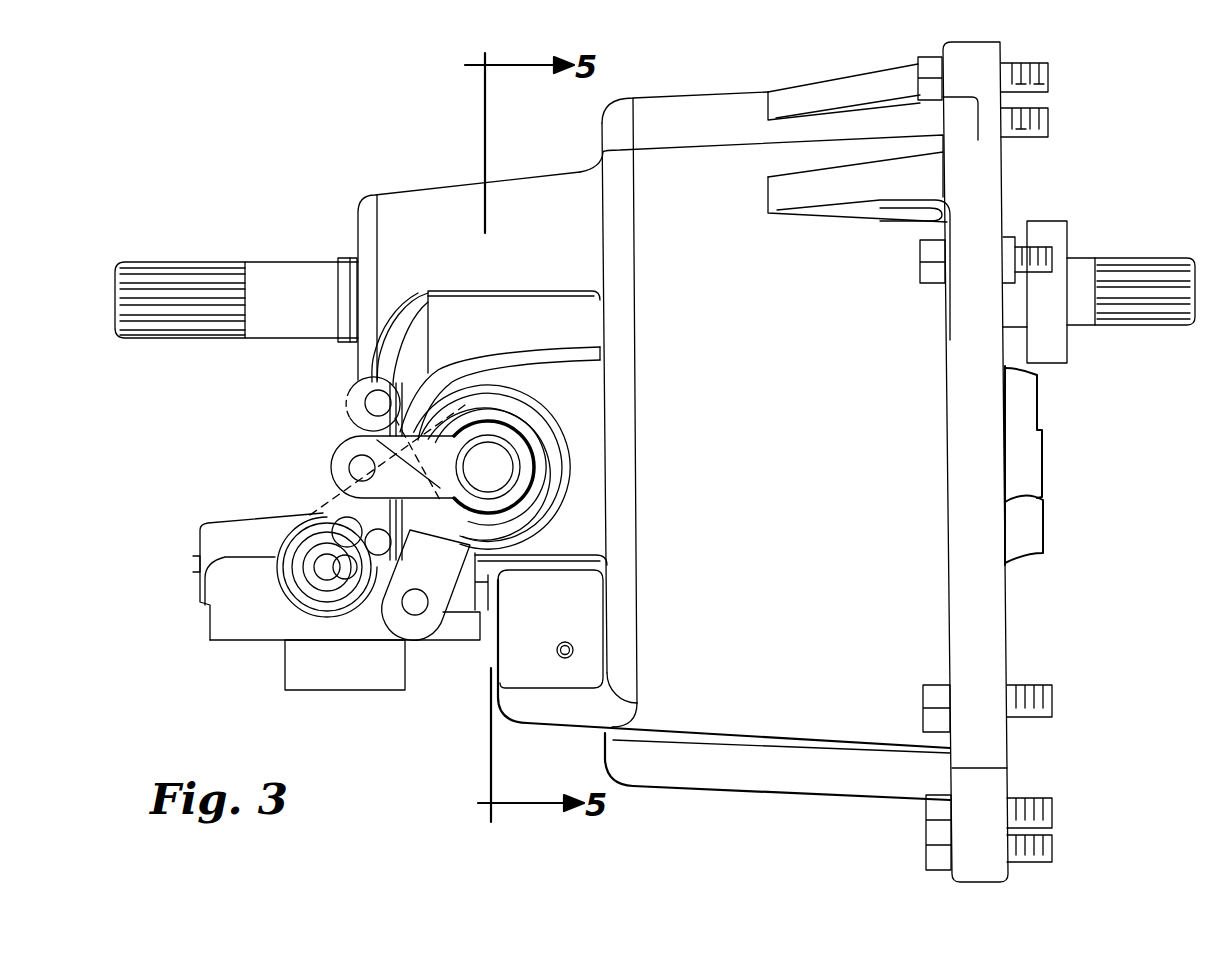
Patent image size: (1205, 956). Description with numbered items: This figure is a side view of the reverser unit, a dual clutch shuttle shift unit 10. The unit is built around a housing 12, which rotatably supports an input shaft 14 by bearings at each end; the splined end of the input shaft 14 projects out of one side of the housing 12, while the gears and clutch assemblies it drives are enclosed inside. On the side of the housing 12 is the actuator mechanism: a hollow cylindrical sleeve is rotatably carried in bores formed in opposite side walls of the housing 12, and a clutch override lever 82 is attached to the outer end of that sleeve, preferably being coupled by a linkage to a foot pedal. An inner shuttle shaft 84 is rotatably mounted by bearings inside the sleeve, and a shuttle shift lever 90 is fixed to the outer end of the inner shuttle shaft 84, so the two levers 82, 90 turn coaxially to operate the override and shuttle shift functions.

The dual clutch shuttle shift unit 10 is at (750, 73).
The housing 12 is at (540, 190).
The input shaft 14 is at (285, 288).
The clutch override lever 82 is at (437, 620).
The inner shuttle shaft 84 is at (492, 463).
The shuttle shift lever 90 is at (334, 443).